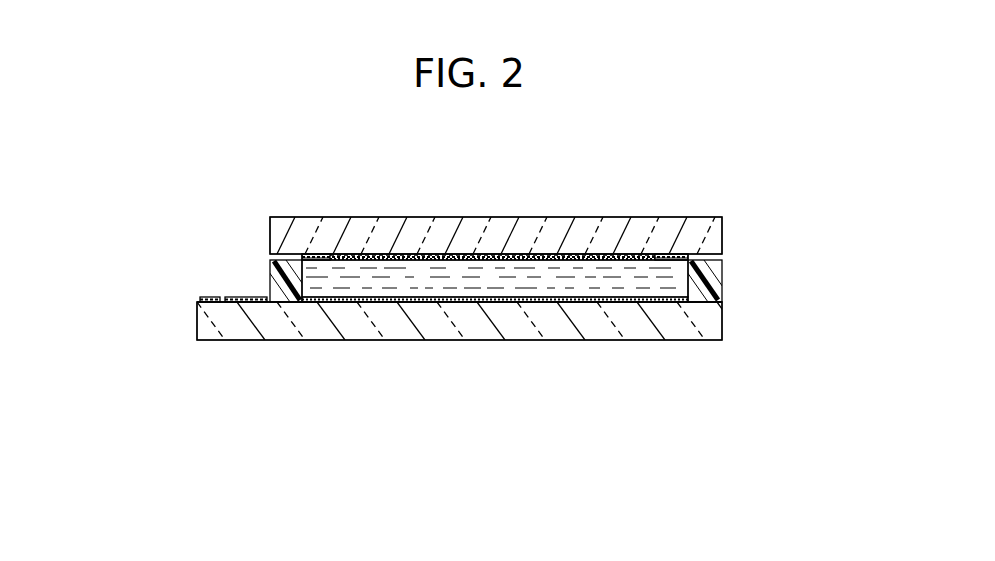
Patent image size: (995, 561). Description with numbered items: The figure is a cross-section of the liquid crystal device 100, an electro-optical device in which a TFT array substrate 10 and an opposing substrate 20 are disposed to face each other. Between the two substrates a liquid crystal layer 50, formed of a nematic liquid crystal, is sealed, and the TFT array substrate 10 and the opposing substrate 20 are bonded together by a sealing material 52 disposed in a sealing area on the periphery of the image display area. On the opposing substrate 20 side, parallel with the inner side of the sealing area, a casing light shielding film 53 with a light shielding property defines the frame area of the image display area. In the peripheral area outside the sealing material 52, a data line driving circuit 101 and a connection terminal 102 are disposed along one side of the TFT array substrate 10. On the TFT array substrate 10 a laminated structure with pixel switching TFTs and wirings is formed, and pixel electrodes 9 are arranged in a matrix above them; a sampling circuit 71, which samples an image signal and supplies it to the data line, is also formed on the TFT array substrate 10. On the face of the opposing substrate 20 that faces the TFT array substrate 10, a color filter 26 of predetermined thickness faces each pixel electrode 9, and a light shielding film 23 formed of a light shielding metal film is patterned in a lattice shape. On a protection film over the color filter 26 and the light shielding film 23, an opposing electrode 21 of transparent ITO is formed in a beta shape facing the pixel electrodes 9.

The liquid crystal device 100 is at (690, 154).
The opposing substrate 20 is at (411, 222).
The TFT array substrate 10 is at (503, 330).
The sealing material 52 is at (272, 295).
The casing light shielding film 53 is at (323, 254).
The opposing electrode 21 is at (486, 254).
The light shielding film 23 is at (604, 254).
The color filter 26 is at (451, 254).
The liquid crystal layer 50 is at (442, 284).
The sampling circuit 71 is at (318, 303).
The pixel electrode 9 is at (345, 303).
The data line driving circuit 101 is at (243, 297).
The connection terminal 102 is at (208, 298).